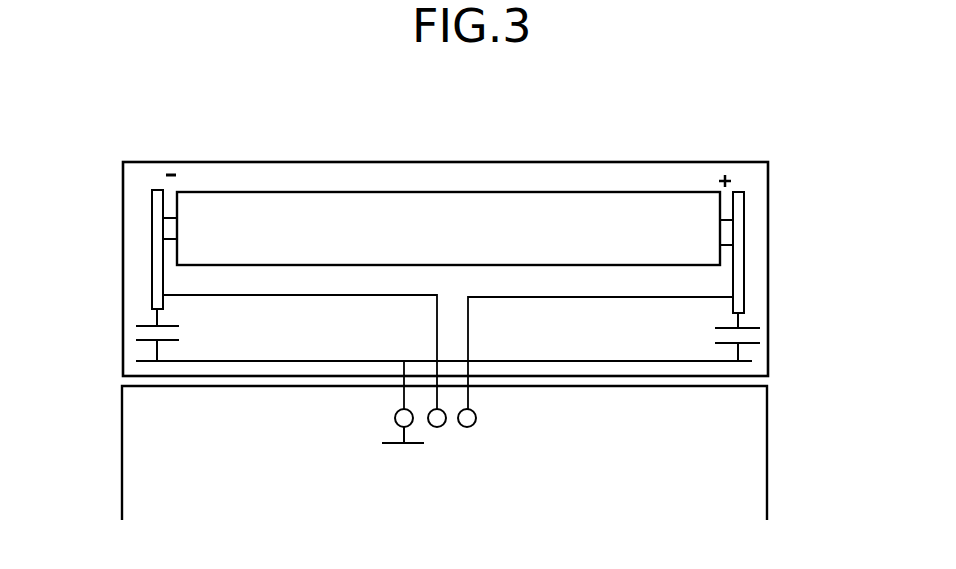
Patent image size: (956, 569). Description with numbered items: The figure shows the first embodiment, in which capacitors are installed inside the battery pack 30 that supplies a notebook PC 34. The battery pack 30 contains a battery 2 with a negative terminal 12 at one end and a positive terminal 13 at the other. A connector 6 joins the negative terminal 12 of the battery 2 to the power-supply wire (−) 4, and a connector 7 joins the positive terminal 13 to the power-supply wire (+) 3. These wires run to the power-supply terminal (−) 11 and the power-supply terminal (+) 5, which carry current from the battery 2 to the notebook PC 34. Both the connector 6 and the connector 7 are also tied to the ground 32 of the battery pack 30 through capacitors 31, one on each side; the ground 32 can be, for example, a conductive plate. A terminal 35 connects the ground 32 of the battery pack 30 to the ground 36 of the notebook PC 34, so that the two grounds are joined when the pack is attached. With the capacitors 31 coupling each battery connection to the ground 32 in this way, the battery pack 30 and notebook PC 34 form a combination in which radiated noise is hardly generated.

The battery pack 30 is at (360, 162).
The battery 2 is at (645, 192).
The connector 6 is at (158, 283).
The negative terminal 12 is at (168, 234).
The connector 7 is at (740, 283).
The positive terminal 13 is at (731, 230).
The power-supply wire (−) 4 is at (347, 295).
The power-supply wire (+) 3 is at (534, 295).
The capacitors 31 is at (135, 330).
The ground 32 is at (207, 361).
The terminal 35 is at (394, 418).
The power-supply terminal (−) 11 is at (437, 427).
The power-supply terminal (+) 5 is at (467, 427).
The ground 36 is at (393, 445).
The notebook PC 34 is at (770, 432).